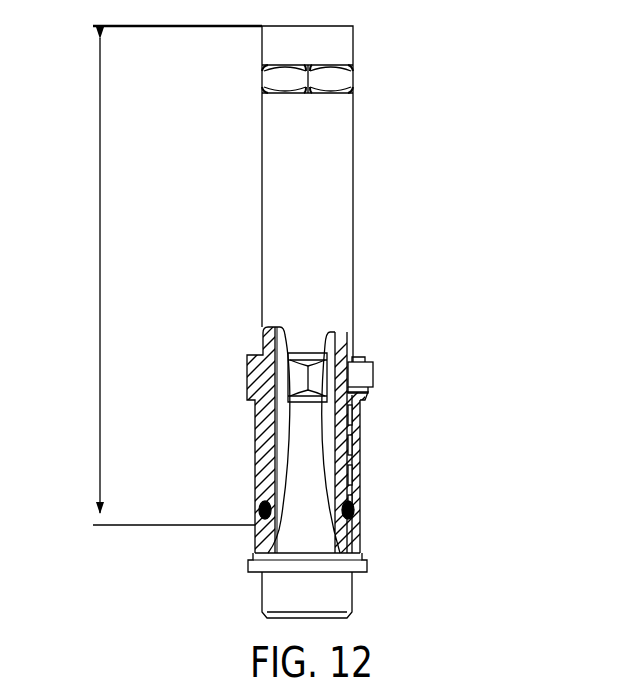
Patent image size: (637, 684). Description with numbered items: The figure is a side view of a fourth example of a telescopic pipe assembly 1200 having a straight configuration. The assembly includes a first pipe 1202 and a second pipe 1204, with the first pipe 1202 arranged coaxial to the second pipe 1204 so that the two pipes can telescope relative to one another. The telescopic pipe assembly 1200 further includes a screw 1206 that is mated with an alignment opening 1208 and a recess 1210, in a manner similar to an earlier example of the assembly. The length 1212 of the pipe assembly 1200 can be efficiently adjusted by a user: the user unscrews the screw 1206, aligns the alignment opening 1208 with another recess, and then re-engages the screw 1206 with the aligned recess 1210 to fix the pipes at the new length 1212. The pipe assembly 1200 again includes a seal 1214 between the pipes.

The telescopic pipe assembly 1200 is at (528, 91).
The first pipe 1202 is at (332, 172).
The second pipe 1204 is at (364, 466).
The screw 1206 is at (384, 368).
The alignment opening 1208 is at (343, 376).
The recess 1210 is at (375, 377).
The length 1212 is at (100, 317).
The seal 1214 is at (259, 501).